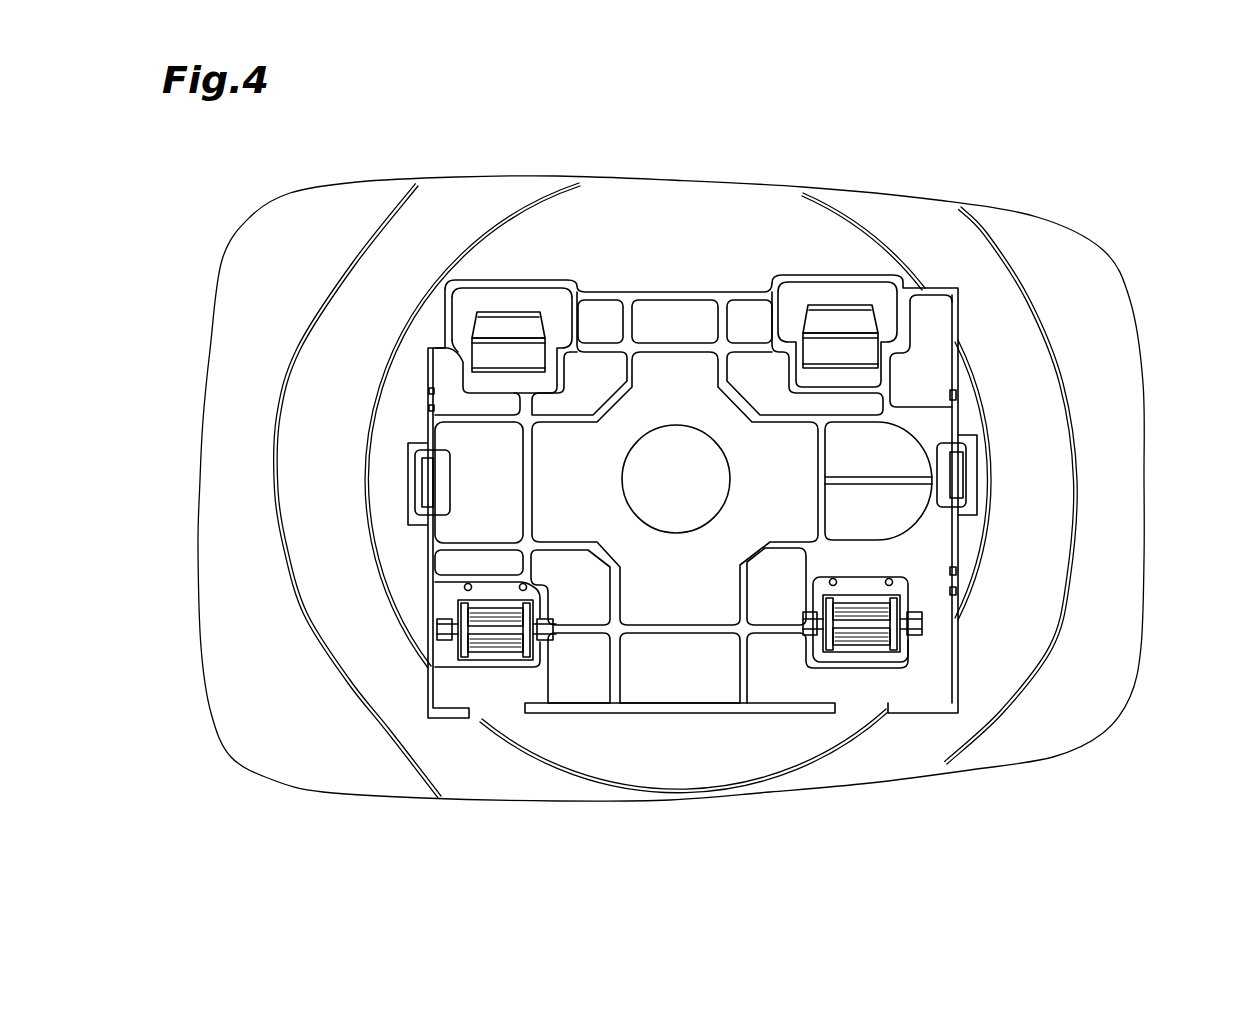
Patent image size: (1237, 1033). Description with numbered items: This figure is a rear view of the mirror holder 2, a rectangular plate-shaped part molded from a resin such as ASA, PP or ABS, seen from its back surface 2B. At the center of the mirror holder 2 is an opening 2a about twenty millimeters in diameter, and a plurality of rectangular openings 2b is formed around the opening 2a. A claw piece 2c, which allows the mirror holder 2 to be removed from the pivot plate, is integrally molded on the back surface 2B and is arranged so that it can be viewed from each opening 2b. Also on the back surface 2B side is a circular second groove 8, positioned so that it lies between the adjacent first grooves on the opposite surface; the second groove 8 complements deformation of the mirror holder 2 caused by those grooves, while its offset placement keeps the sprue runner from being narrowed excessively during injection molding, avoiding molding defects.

The mirror holder 2 is at (697, 413).
The back surface 2B is at (1103, 317).
The opening 2a is at (713, 477).
The rectangular opening 2b is at (800, 297).
The claw piece 2c is at (514, 327).
The second groove 8 is at (993, 493).